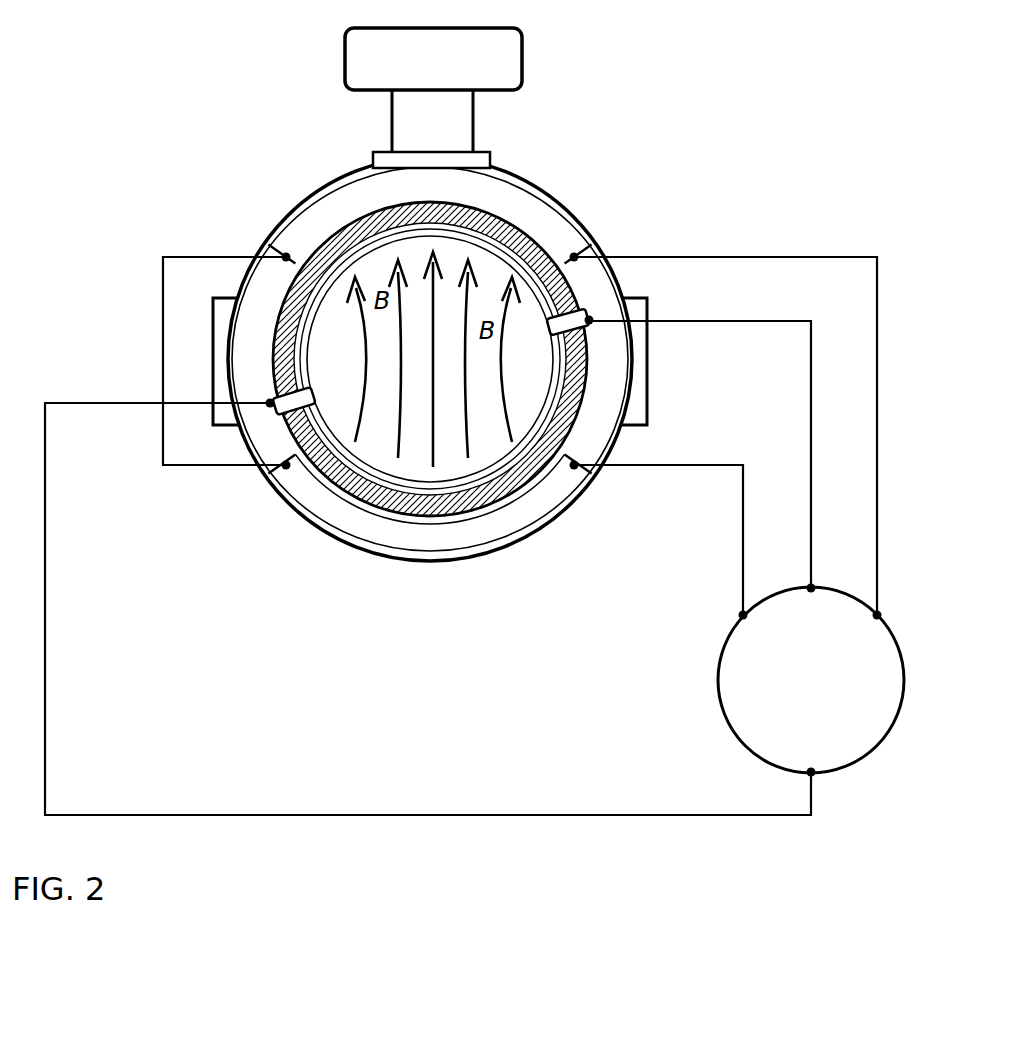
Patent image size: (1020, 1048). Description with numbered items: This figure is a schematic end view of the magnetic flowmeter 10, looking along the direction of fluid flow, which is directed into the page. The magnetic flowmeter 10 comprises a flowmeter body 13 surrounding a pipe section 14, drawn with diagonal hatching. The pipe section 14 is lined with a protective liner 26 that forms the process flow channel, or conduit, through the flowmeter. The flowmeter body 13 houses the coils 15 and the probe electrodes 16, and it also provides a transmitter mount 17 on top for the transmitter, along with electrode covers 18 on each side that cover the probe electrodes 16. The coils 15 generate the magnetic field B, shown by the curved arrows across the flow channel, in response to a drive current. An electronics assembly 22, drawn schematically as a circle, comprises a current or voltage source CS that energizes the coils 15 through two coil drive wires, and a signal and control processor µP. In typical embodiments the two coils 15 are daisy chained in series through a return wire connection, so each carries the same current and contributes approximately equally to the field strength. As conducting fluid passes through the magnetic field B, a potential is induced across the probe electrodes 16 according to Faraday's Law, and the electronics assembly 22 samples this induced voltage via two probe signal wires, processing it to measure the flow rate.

The magnetic flowmeter 10 is at (147, 70).
The flowmeter body 13 is at (305, 205).
The pipe section 14 is at (508, 498).
The coils 15 is at (542, 222).
The probe electrodes 16 is at (306, 398).
The transmitter mount 17 is at (357, 52).
The electrode covers 18 is at (228, 322).
The electronics assembly 22 is at (720, 718).
The protective liner 26 is at (440, 492).